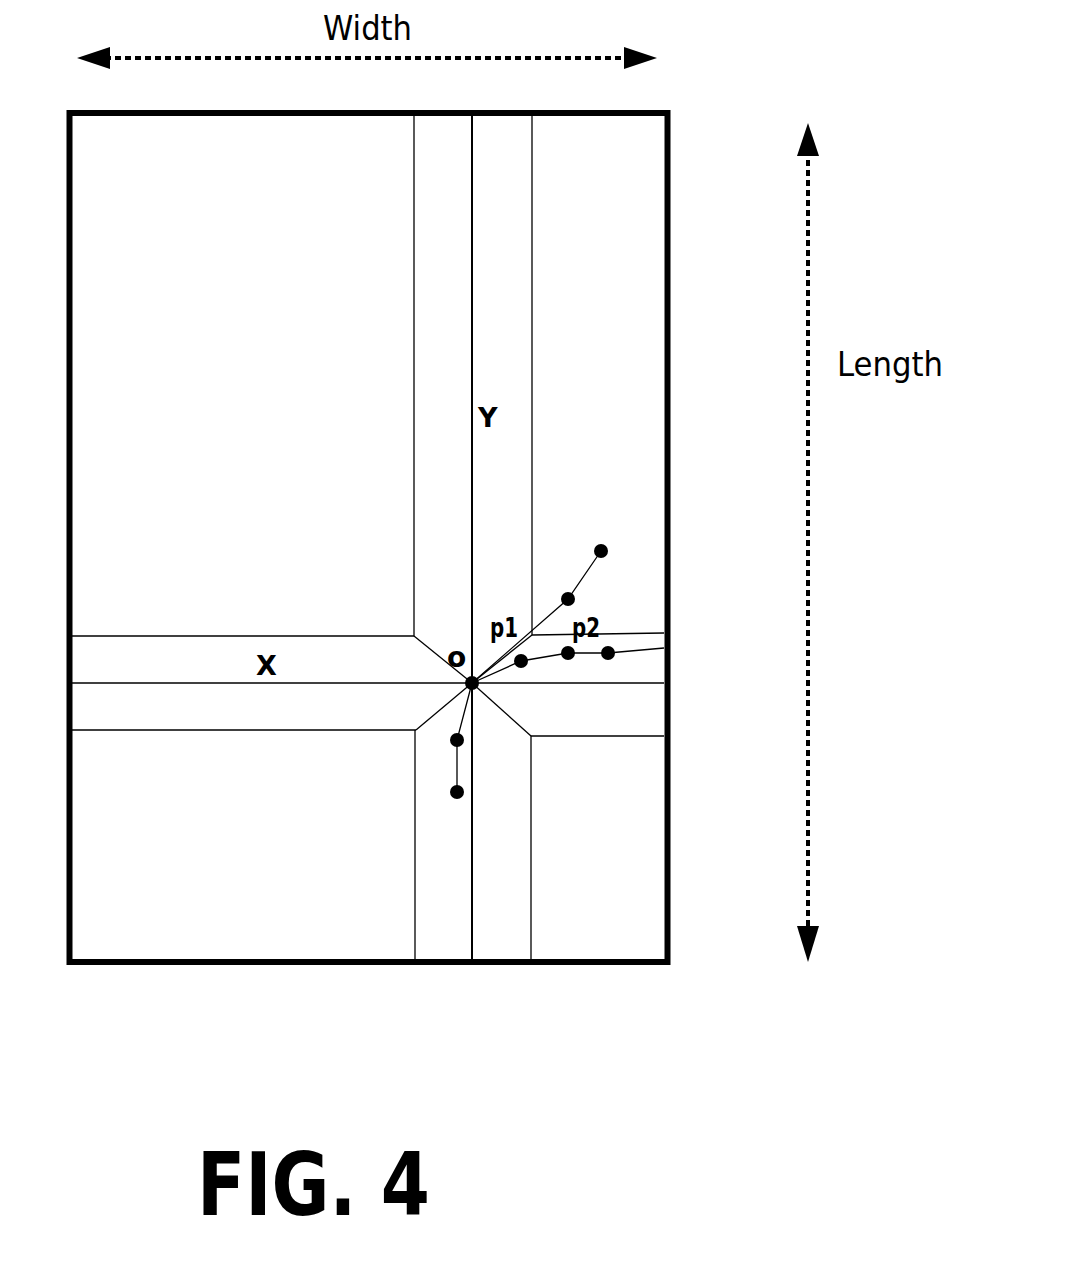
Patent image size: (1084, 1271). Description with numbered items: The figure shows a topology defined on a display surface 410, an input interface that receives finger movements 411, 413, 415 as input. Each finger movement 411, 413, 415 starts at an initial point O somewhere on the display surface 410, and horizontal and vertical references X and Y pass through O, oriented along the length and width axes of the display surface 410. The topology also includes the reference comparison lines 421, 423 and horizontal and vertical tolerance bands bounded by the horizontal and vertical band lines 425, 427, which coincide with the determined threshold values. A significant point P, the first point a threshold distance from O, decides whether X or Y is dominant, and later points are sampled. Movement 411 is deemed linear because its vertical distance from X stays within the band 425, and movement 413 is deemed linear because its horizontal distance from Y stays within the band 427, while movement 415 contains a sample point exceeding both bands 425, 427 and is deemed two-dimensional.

The display surface 410 is at (343, 166).
The finger movement 411 is at (568, 672).
The finger movement 413 is at (457, 763).
The finger movement 415 is at (547, 602).
The reference comparison line 421 is at (442, 657).
The reference comparison line 423 is at (447, 704).
The horizontal band line 425 is at (343, 635).
The vertical band line 427 is at (414, 484).